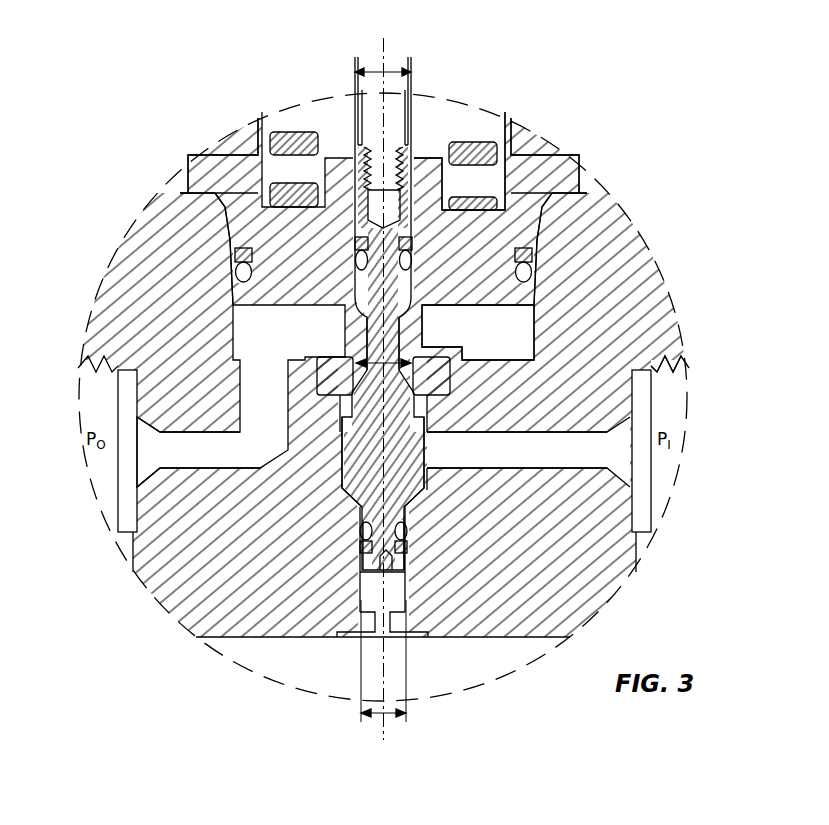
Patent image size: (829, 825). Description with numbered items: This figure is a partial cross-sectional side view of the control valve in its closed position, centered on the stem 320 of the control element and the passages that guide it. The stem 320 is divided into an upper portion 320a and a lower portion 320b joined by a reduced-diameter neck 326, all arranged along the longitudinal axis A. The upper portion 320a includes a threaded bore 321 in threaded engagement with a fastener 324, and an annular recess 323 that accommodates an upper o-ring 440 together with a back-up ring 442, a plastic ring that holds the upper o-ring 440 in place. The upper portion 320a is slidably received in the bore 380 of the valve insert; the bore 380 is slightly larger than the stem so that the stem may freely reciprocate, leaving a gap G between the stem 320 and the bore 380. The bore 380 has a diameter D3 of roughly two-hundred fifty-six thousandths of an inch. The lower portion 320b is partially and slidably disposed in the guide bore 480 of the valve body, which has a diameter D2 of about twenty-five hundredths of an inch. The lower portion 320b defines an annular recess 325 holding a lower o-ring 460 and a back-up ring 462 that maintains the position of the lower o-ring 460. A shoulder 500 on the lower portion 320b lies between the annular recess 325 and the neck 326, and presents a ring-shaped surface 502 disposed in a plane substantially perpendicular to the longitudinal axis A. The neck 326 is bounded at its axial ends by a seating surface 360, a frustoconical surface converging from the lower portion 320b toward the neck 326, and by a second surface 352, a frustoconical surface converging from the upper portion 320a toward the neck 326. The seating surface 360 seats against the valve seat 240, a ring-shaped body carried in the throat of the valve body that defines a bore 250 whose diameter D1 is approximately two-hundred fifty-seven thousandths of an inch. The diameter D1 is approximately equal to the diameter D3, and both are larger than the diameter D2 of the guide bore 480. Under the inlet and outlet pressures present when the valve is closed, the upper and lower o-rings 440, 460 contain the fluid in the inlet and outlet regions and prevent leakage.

The valve seat 240 is at (433, 355).
The bore 250 is at (620, 392).
The stem 320 is at (362, 468).
The upper portion of the stem 320a is at (418, 248).
The lower portion of the stem 320b is at (540, 415).
The threaded bore 321 is at (394, 168).
The annular recess 323 is at (268, 215).
The fastener 324 is at (372, 105).
The annular recess 325 is at (358, 537).
The neck 326 is at (402, 318).
The second surface 352 is at (345, 335).
The seating surface 360 is at (322, 377).
The bore 380 is at (420, 200).
The upper o-ring 440 is at (560, 217).
The back-up ring 442 is at (455, 225).
The lower o-ring 460 is at (408, 535).
The back-up ring 462 is at (395, 562).
The guide bore 480 is at (405, 598).
The shoulder 500 is at (357, 497).
The ring-shaped surface 502 is at (415, 420).
The longitudinal axis A is at (390, 46).
The gap G is at (350, 122).
The diameter of the valve seat bore D1 is at (357, 362).
The diameter of the guide bore D2 is at (385, 718).
The diameter of the valve insert bore D3 is at (396, 72).